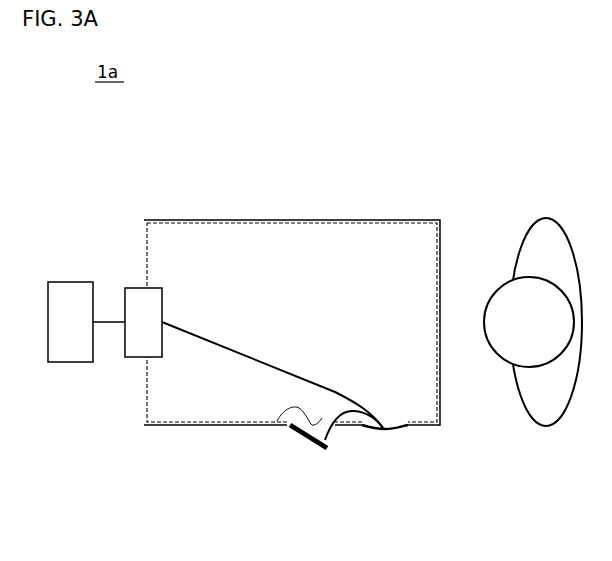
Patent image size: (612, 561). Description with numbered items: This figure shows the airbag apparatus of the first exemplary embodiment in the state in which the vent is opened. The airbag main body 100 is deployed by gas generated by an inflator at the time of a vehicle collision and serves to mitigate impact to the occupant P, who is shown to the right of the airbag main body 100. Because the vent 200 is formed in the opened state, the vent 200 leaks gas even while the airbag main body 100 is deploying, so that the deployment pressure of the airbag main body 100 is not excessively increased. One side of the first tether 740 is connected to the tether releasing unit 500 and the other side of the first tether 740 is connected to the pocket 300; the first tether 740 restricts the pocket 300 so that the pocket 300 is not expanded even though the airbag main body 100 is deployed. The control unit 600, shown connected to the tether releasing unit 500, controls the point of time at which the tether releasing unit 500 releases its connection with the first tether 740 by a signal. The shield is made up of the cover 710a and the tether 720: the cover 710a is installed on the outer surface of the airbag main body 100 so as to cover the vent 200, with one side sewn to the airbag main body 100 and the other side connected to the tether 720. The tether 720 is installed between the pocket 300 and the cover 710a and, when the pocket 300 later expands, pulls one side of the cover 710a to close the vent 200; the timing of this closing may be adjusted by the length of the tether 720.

The airbag main body 100 is at (293, 219).
The control unit 600 is at (70, 298).
The tether releasing unit 500 is at (138, 345).
The first tether 740 is at (218, 347).
The vent 200 is at (278, 425).
The cover 710a is at (308, 440).
The tether 720 is at (330, 438).
The pocket 300 is at (395, 430).
The occupant P is at (545, 248).